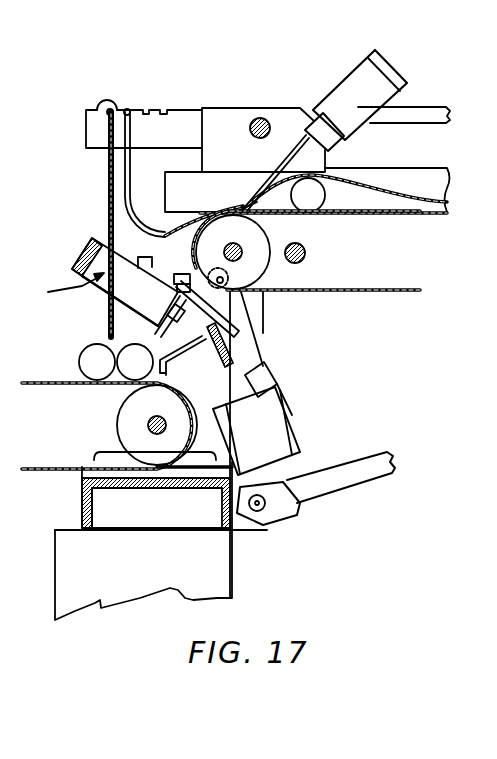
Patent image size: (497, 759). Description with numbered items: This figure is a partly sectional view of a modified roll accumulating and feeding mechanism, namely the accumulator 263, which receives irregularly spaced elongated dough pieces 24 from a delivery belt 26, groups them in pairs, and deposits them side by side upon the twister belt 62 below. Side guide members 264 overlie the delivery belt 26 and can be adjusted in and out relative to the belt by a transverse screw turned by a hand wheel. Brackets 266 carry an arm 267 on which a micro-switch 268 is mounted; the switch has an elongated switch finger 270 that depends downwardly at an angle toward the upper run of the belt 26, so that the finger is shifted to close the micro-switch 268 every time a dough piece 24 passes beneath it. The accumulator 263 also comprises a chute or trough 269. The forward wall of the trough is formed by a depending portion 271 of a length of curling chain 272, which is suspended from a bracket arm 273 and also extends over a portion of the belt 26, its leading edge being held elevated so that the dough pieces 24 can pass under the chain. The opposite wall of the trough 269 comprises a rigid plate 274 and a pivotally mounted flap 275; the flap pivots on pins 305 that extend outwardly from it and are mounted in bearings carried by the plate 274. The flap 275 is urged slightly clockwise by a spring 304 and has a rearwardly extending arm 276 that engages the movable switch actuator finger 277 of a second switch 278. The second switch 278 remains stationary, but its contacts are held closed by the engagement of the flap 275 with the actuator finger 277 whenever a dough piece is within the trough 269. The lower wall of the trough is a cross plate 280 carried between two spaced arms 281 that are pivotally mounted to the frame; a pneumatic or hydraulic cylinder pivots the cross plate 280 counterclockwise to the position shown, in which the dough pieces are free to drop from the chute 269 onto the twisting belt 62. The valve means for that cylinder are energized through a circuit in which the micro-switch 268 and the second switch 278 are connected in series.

The dough piece 24 is at (318, 197).
The delivery belt 26 is at (343, 218).
The twister belt 62 is at (49, 466).
The accumulator 263 is at (220, 122).
The side guide member 264 is at (432, 178).
The bracket 266 is at (14, 150).
The arm 267 is at (432, 117).
The micro-switch 268 is at (368, 68).
The trough 269 is at (57, 287).
The switch finger 270 is at (267, 180).
The depending portion 271 is at (102, 195).
The curling chain 272 is at (124, 166).
The bracket arm 273 is at (158, 124).
The rigid plate 274 is at (184, 278).
The flap 275 is at (125, 282).
The rearwardly extending arm 276 is at (262, 326).
The switch actuator finger 277 is at (258, 333).
The second switch 278 is at (275, 403).
The cross plate 280 is at (203, 336).
The arm 281 is at (158, 330).
The spring 304 is at (280, 376).
The pin 305 is at (245, 299).